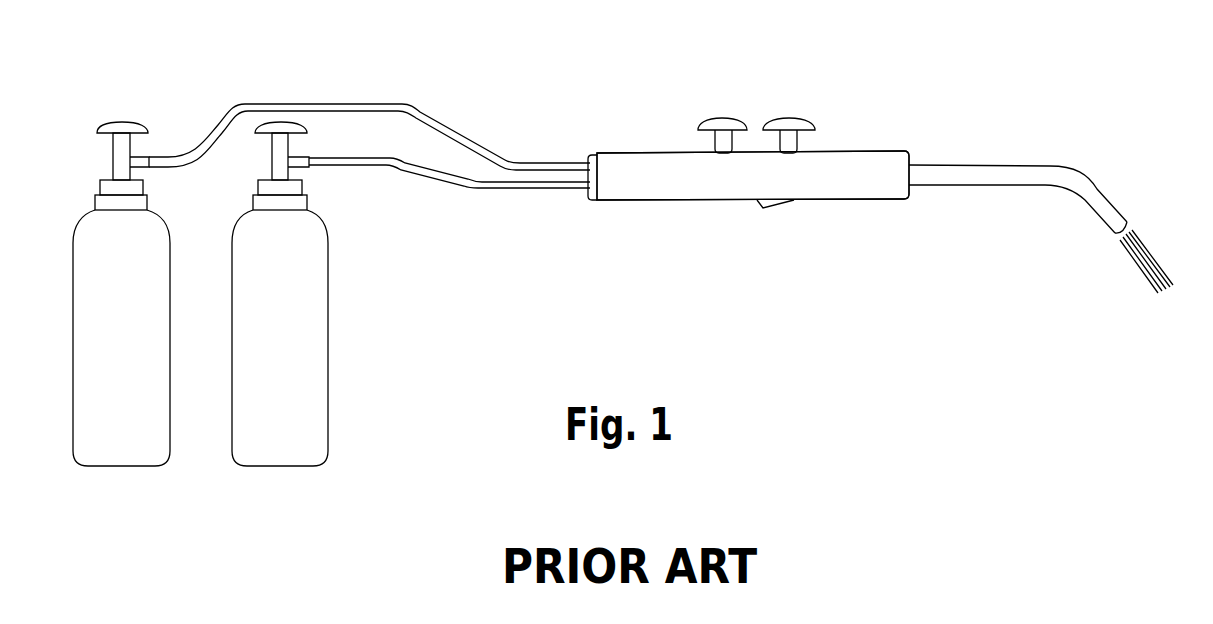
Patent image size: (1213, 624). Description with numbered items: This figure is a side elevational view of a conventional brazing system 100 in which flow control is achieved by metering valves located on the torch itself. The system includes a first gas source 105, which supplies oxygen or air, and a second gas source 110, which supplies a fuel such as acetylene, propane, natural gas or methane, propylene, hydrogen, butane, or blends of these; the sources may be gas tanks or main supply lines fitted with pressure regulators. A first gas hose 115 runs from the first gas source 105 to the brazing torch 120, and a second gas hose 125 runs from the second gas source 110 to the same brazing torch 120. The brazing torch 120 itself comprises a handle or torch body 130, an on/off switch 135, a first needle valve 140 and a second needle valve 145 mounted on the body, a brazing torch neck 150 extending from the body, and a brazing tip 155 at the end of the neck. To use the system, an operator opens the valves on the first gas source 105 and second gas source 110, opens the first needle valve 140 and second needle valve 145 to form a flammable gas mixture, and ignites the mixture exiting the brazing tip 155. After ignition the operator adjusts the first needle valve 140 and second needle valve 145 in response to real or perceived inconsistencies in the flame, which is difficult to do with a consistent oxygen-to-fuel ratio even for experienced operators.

The brazing system 100 is at (1124, 127).
The first gas source 105 is at (122, 467).
The second gas source 110 is at (278, 467).
The first gas hose 115 is at (335, 104).
The brazing torch 120 is at (655, 180).
The second gas hose 125 is at (540, 192).
The torch body 130 is at (690, 200).
The on/off switch 135 is at (780, 208).
The first needle valve 140 is at (795, 118).
The second needle valve 145 is at (726, 118).
The brazing torch neck 150 is at (995, 165).
The brazing tip 155 is at (1118, 205).